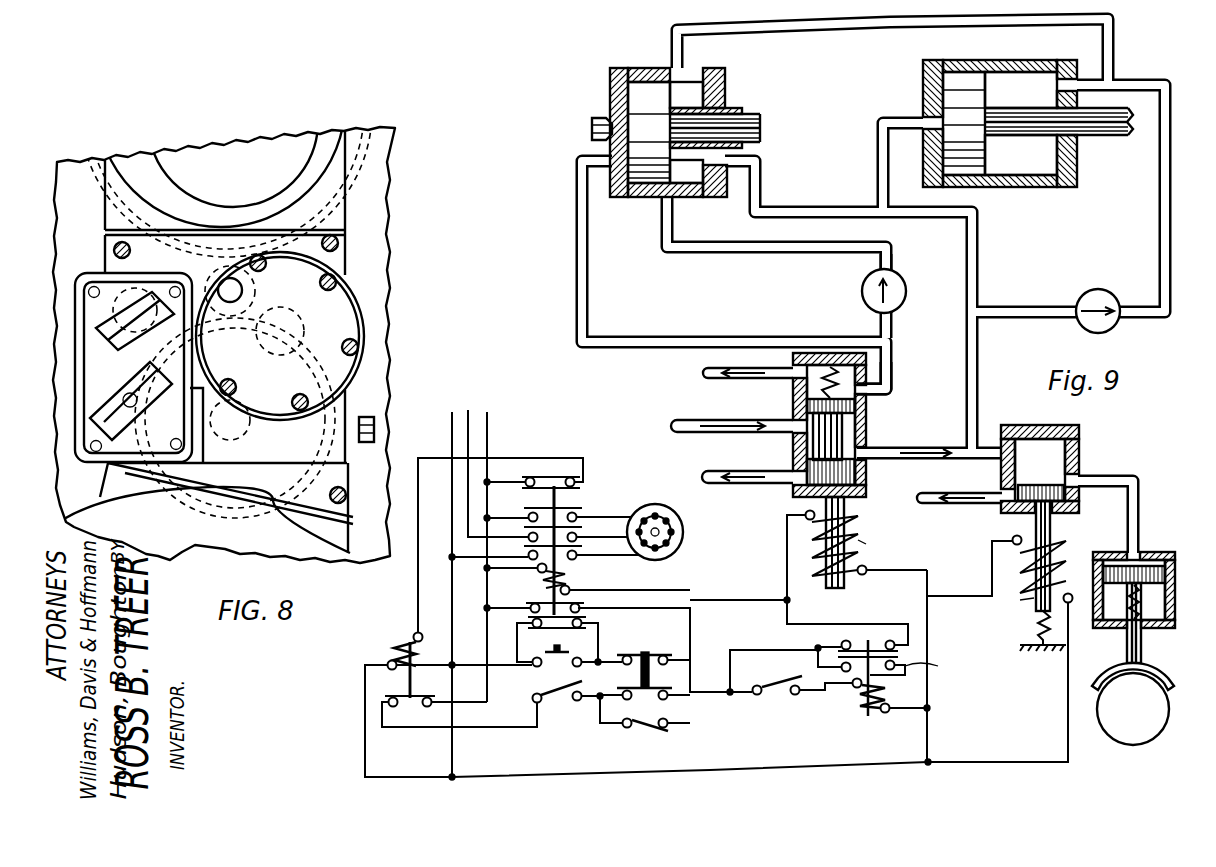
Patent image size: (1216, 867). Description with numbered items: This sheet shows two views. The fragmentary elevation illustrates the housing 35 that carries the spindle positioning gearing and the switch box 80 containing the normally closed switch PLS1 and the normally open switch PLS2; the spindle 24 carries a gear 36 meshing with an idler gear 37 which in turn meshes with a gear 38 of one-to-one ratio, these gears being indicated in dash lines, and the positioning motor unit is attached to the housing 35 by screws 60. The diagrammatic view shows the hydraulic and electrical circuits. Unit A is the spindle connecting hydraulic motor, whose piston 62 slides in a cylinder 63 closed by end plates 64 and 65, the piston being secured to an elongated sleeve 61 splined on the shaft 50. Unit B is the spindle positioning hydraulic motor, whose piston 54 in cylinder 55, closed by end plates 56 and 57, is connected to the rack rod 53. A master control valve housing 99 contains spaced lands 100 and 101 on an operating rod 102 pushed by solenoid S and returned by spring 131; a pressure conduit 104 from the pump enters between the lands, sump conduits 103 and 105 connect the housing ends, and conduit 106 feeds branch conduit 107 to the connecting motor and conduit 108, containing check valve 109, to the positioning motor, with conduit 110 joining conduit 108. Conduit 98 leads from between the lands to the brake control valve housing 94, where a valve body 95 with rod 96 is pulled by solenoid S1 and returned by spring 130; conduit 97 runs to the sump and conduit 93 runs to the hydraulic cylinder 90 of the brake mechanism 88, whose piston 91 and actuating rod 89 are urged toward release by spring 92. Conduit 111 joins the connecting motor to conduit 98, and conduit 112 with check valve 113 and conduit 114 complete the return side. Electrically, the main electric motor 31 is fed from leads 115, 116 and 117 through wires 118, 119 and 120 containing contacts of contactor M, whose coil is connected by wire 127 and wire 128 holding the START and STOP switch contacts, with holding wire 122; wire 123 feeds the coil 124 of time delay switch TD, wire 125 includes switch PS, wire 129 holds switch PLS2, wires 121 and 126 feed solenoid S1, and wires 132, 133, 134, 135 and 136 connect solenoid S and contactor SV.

In FIG. 8, the spindle 24 is at (306, 140).
In FIG. 9, the spindle 24 is at (1166, 710).
In FIG. 8, the gear 36 is at (372, 140).
In FIG. 8, the housing 35 is at (347, 262).
In FIG. 8, the idler gear 37 is at (250, 290).
In FIG. 8, the rod 53 is at (287, 318).
In FIG. 9, the rod 53 is at (1020, 138).
In FIG. 8, the end plate 56 is at (360, 303).
In FIG. 9, the end plate 56 is at (923, 98).
In FIG. 8, the assembling and securing screws or bolts 60 is at (362, 340).
In FIG. 8, the switch box 80 is at (80, 386).
In FIG. 8, the gear 38 is at (295, 476).
In FIG. 9, the unit A is at (612, 70).
In FIG. 9, the unit B is at (916, 66).
In FIG. 9, the cylinder 63 is at (658, 56).
In FIG. 9, the piston 62 is at (649, 132).
In FIG. 9, the elongated sleeve 61 is at (730, 104).
In FIG. 9, the shaft 50 is at (762, 116).
In FIG. 9, the end plate 64 is at (628, 197).
In FIG. 9, the end plate 65 is at (712, 197).
In FIG. 9, the conduit 111 is at (761, 186).
In FIG. 9, the conduit 114 is at (826, 30).
In FIG. 9, the cylinder 55 is at (1000, 72).
In FIG. 9, the piston 54 is at (985, 104).
In FIG. 9, the end plate 57 is at (1077, 162).
In FIG. 9, the conduit 112 is at (1160, 190).
In FIG. 9, the conduit 108 is at (893, 254).
In FIG. 9, the one-way check valve 109 is at (907, 283).
In FIG. 9, the conduit 110 is at (736, 253).
In FIG. 9, the branch conduit 107 is at (718, 336).
In FIG. 9, the spring 131 is at (868, 328).
In FIG. 9, the conduit 106 is at (895, 370).
In FIG. 9, the check valve 113 is at (1116, 323).
In FIG. 9, the conduit 105 is at (772, 366).
In FIG. 9, the land 101 is at (800, 408).
In FIG. 9, the valve housing 99 is at (870, 432).
In FIG. 9, the conduit 104 is at (757, 434).
In FIG. 9, the land 100 is at (806, 454).
In FIG. 9, the conduit 103 is at (772, 475).
In FIG. 9, the operating rod 102 is at (850, 506).
In FIG. 9, the conduit 98 is at (968, 458).
In FIG. 9, the valve housing 94 is at (1074, 450).
In FIG. 9, the conduit 97 is at (976, 506).
In FIG. 9, the actuating rod 96 is at (1036, 530).
In FIG. 9, the valve body 95 is at (1070, 514).
In FIG. 9, the conduit 93 is at (1138, 512).
In FIG. 9, the piston 91 is at (1176, 556).
In FIG. 9, the hydraulic cylinder 90 is at (1176, 596).
In FIG. 9, the spring 92 is at (1130, 602).
In FIG. 9, the actuating rod 89 is at (1142, 645).
In FIG. 9, the brake mechanism 88 is at (1152, 672).
In FIG. 9, the main electric motor 31 is at (684, 524).
In FIG. 9, the lead 115 is at (450, 424).
In FIG. 9, the lead 116 is at (472, 408).
In FIG. 9, the lead 117 is at (494, 420).
In FIG. 9, the wire 123 is at (583, 460).
In FIG. 9, the wire 120 is at (600, 514).
In FIG. 9, the wire 119 is at (618, 508).
In FIG. 9, the wire 118 is at (606, 558).
In FIG. 9, the wire 127 is at (538, 574).
In FIG. 9, the wire 121 is at (738, 600).
In FIG. 9, the wire 132 is at (820, 622).
In FIG. 9, the wire 133 is at (936, 634).
In FIG. 9, the wire 136 is at (816, 660).
In FIG. 9, the coil 124 is at (420, 656).
In FIG. 9, the wire 122 is at (604, 634).
In FIG. 9, the wire 128 is at (694, 640).
In FIG. 9, the wire 129 is at (698, 720).
In FIG. 9, the wire 125 is at (486, 730).
In FIG. 9, the wire 126 is at (638, 770).
In FIG. 9, the spring 130 is at (1036, 632).
In FIG. 9, the wire 134 is at (924, 714).
In FIG. 9, the wire 135 is at (834, 704).
In FIG. 9, the solenoid S is at (842, 544).
In FIG. 9, the solenoid S1 is at (1035, 572).
In FIG. 9, the contactor M is at (543, 546).
In FIG. 9, the contactor SV is at (901, 669).
In FIG. 9, the time delay switch TD is at (396, 670).
In FIG. 9, the spindle positioning switch PS is at (578, 702).
In FIG. 9, the normally closed switch PLS1 is at (778, 695).
In FIG. 9, the normally open switch PLS2 is at (649, 736).
In FIG. 9, the starting switch START is at (557, 649).
In FIG. 9, the stop switch STOP is at (644, 665).